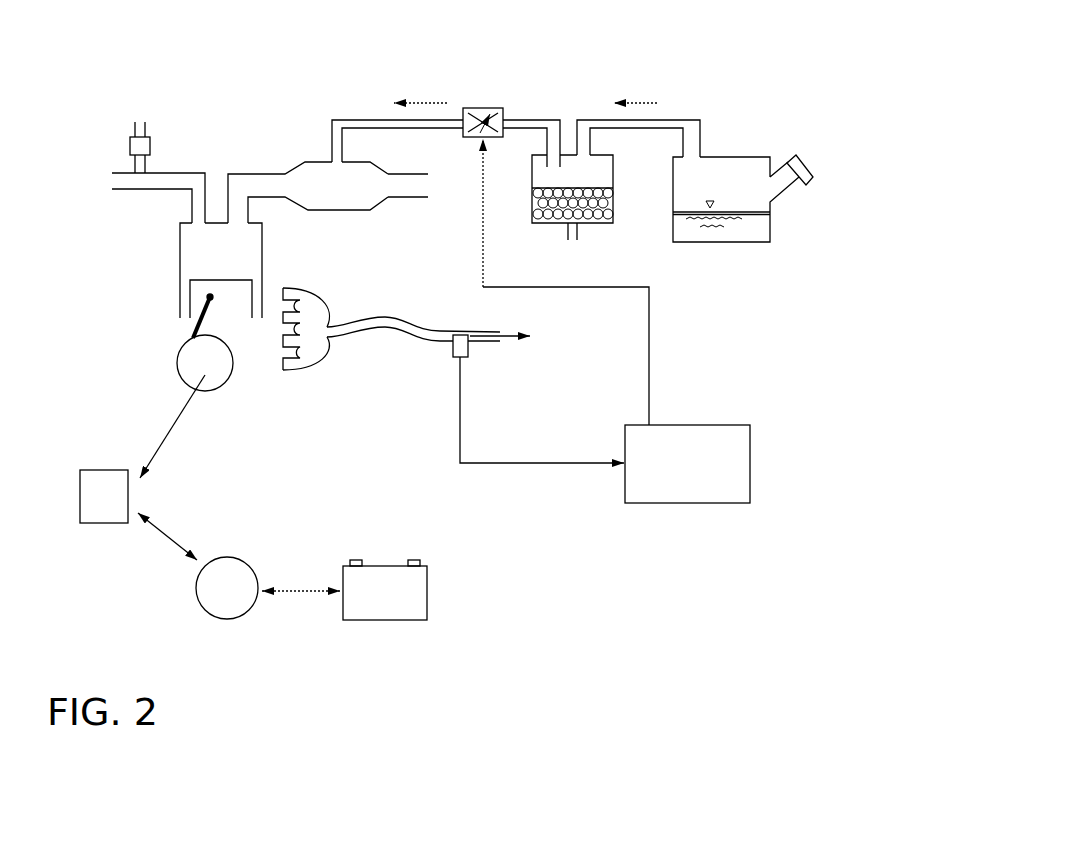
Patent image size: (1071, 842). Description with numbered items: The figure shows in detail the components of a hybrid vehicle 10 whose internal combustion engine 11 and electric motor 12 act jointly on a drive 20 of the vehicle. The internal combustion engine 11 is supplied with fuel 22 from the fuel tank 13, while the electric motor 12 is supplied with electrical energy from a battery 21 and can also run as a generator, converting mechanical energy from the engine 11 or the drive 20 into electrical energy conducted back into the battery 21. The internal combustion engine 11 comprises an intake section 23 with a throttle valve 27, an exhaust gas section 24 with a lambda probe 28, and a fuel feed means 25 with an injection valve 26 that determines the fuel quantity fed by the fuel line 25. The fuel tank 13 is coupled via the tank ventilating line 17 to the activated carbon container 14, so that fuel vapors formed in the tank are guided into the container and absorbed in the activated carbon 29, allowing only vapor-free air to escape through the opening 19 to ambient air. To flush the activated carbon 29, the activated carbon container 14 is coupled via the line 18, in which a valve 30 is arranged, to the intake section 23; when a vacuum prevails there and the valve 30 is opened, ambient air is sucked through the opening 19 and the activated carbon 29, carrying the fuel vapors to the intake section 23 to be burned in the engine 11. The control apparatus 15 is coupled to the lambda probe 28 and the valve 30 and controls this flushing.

The hybrid vehicle 10 is at (690, 578).
The internal combustion engine 11 is at (200, 257).
The electric motor 12 is at (240, 615).
The fuel tank 13 is at (743, 168).
The activated carbon container 14 is at (612, 175).
The control apparatus 15 is at (750, 463).
The tank ventilating line 17 is at (678, 119).
The line 18 is at (346, 118).
The opening 19 is at (577, 238).
The drive 20 is at (102, 523).
The battery 21 is at (427, 591).
The fuel 22 is at (753, 231).
The intake section 23 is at (333, 196).
The exhaust gas section 24 is at (359, 330).
The fuel feed means 25 is at (125, 189).
The injection valve 26 is at (143, 146).
The throttle valve 27 is at (412, 187).
The lambda probe 28 is at (467, 357).
The activated carbon 29 is at (537, 216).
The valve 30 is at (473, 107).